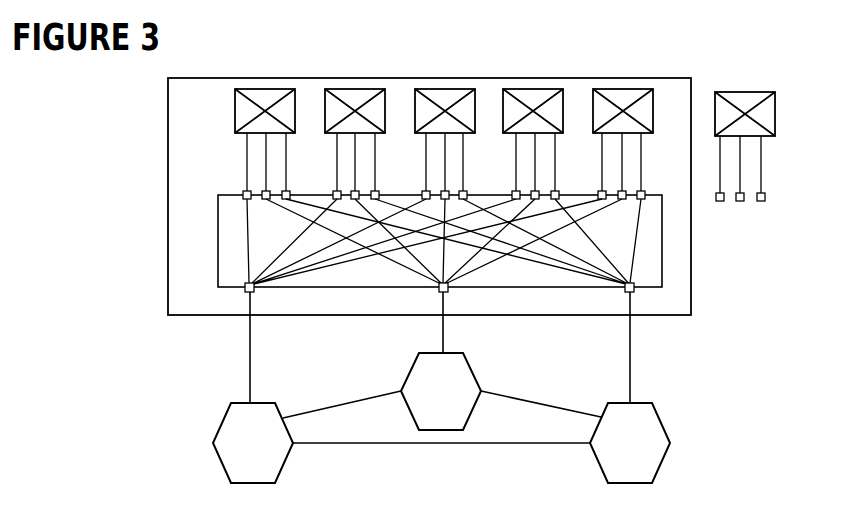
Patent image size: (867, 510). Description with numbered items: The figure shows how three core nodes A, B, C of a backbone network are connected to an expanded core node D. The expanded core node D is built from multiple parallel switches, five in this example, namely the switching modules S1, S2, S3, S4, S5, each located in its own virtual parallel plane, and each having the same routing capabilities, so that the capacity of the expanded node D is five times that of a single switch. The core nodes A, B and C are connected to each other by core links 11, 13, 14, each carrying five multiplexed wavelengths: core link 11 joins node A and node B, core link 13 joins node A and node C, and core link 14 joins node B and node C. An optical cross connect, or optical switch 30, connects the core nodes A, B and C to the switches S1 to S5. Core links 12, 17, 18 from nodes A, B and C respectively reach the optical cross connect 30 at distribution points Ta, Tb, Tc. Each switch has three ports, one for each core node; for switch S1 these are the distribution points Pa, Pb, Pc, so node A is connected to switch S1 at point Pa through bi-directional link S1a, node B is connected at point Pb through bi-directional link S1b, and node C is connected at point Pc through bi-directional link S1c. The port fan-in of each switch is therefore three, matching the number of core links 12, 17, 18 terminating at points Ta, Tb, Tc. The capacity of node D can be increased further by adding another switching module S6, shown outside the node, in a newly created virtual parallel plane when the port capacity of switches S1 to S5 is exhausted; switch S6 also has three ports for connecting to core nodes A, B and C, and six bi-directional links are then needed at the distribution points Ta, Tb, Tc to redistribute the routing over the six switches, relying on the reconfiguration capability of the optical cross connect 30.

The core link 11 is at (337, 405).
The core link 12 is at (250, 333).
The core link 13 is at (397, 445).
The core link 14 is at (528, 401).
The core link 17 is at (443, 328).
The core link 18 is at (630, 335).
The optical cross connect 30 is at (421, 242).
The expanded core node D is at (115, 258).
The switching module S1 is at (265, 91).
The switching module S2 is at (355, 91).
The switching module S3 is at (445, 91).
The switching module S4 is at (533, 91).
The switching module S5 is at (623, 91).
The switching module S6 is at (747, 125).
The bi-directional link S1a is at (247, 142).
The bi-directional link S1b is at (266, 150).
The bi-directional link S1c is at (286, 162).
The distribution point Pa is at (235, 206).
The distribution point Pb is at (262, 208).
The distribution point Pc is at (297, 185).
The distribution point Ta is at (240, 298).
The distribution point Tb is at (455, 298).
The distribution point Tc is at (618, 298).
The core node A is at (253, 443).
The core node B is at (441, 391).
The core node C is at (630, 443).